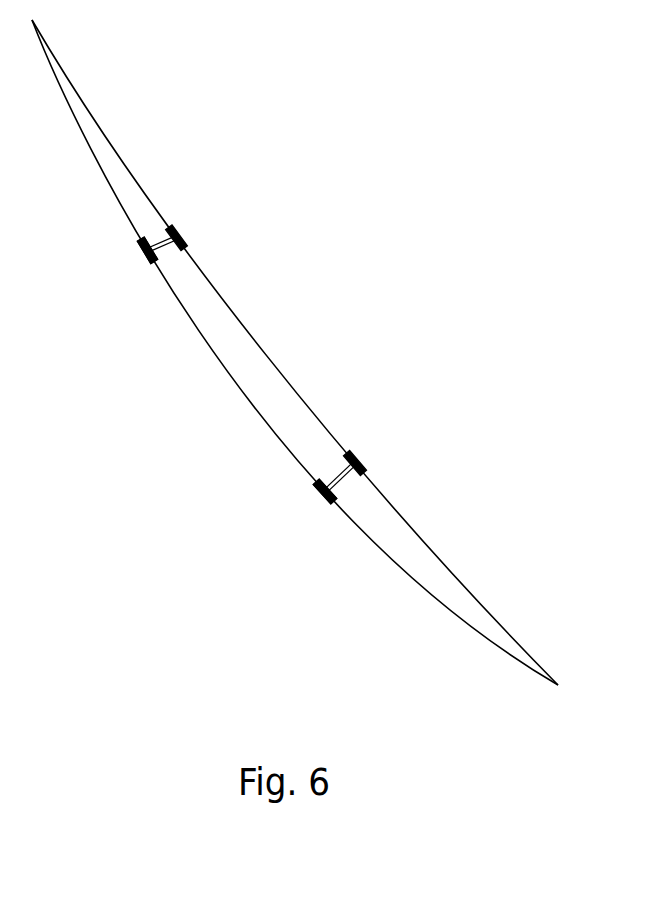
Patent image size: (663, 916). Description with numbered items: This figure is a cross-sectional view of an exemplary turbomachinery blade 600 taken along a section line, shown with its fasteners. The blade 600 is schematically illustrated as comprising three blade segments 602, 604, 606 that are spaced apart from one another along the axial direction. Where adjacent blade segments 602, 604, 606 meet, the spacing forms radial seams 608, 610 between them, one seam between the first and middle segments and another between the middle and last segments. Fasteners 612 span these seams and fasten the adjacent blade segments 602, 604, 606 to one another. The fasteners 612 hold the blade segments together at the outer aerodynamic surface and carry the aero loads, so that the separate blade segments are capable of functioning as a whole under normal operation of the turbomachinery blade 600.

The turbomachinery blade 600 is at (340, 205).
The blade segment 602 is at (115, 163).
The blade segment 604 is at (245, 380).
The blade segment 606 is at (437, 576).
The radial seam 608 is at (158, 240).
The radial seam 610 is at (332, 478).
The fastener 612 is at (138, 249).